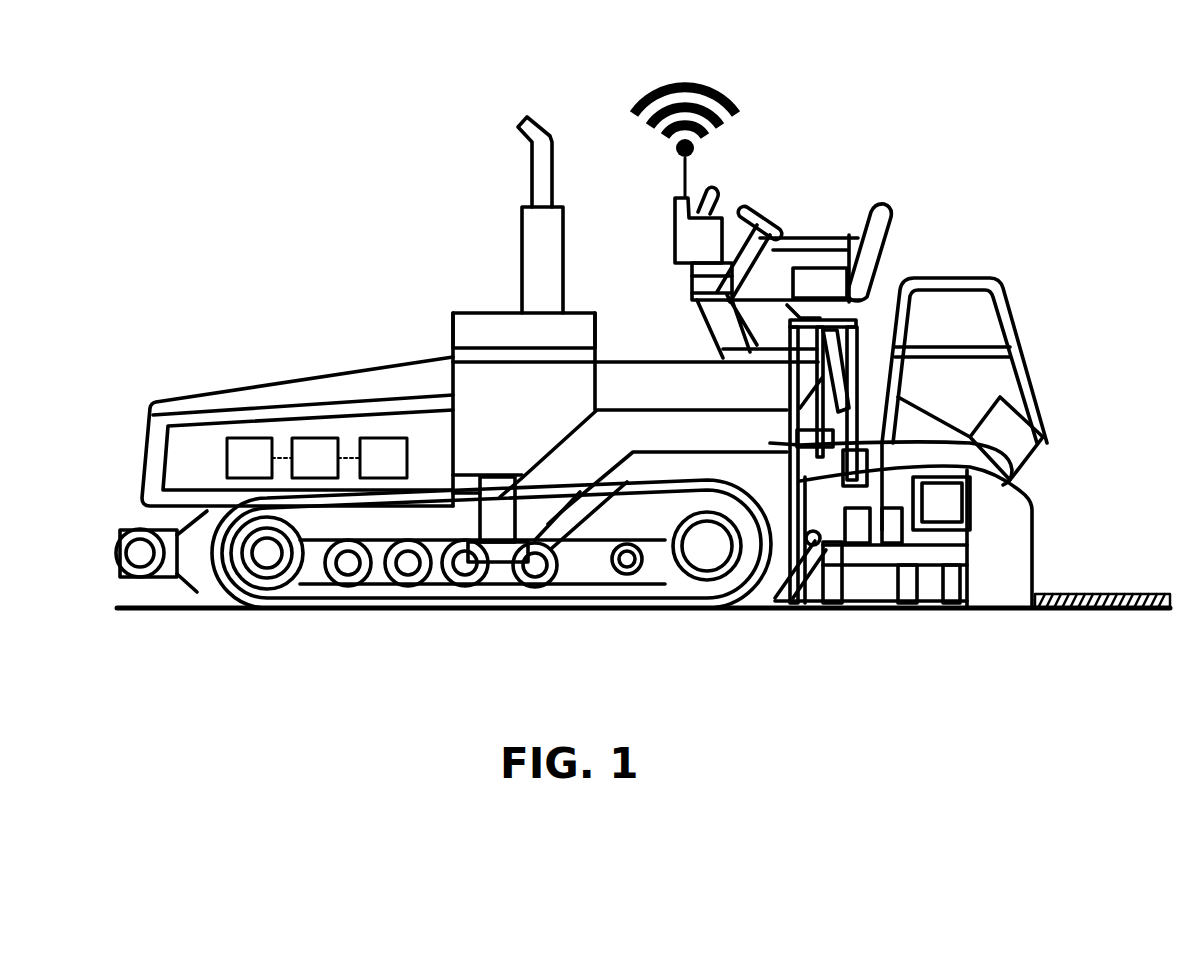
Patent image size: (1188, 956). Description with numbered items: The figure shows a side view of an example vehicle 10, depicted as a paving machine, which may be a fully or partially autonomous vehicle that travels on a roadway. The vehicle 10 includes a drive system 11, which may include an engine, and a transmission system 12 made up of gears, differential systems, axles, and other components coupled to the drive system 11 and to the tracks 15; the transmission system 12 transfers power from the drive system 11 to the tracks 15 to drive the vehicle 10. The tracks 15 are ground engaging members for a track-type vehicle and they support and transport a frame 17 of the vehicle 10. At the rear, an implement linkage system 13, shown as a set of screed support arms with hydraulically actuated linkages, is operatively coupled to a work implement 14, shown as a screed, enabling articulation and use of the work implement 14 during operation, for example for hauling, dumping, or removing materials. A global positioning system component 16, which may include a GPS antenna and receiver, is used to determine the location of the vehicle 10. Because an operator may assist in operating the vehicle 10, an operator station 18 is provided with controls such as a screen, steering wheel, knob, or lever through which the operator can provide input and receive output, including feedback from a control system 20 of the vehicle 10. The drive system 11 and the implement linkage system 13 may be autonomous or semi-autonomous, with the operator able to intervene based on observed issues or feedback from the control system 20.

The vehicle 10 is at (368, 200).
The drive system 11 is at (327, 471).
The transmission system 12 is at (395, 471).
The implement linkage system 13 is at (588, 527).
The work implement 14 is at (1056, 553).
The tracks 15 is at (380, 627).
The global positioning system (GPS) component 16 is at (716, 153).
The frame 17 is at (205, 571).
The operator station 18 is at (816, 189).
The control system 20 is at (261, 471).